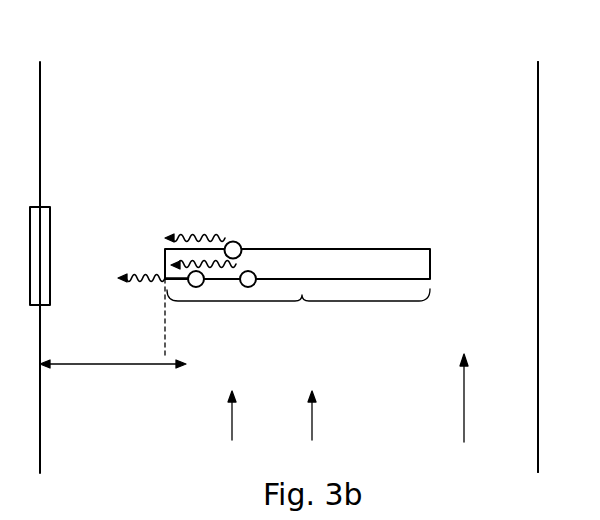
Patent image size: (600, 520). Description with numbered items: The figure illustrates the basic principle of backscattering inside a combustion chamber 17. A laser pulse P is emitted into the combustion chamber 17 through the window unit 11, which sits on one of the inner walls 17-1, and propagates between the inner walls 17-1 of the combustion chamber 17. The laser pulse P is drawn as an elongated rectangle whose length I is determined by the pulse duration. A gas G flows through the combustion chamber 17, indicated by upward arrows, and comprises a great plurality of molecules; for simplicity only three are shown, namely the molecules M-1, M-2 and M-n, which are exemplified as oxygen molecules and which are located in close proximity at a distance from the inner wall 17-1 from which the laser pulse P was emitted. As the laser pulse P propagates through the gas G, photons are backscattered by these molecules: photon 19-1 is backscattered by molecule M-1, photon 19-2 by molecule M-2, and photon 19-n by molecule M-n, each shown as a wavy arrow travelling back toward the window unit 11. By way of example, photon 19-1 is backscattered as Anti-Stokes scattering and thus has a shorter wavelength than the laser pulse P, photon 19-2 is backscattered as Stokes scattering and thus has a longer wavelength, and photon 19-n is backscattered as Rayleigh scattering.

The window unit 11 is at (50, 213).
The combustion chamber 17 is at (458, 117).
The inner wall 17-1 is at (40, 425).
The photon 19-1 is at (198, 224).
The photon 19-2 is at (138, 280).
The photon 19-n is at (168, 258).
The molecule M-1 is at (240, 242).
The molecule M-2 is at (197, 287).
The molecule M-n is at (248, 287).
The laser pulse P is at (322, 249).
The length I is at (298, 312).
The gas G is at (348, 398).